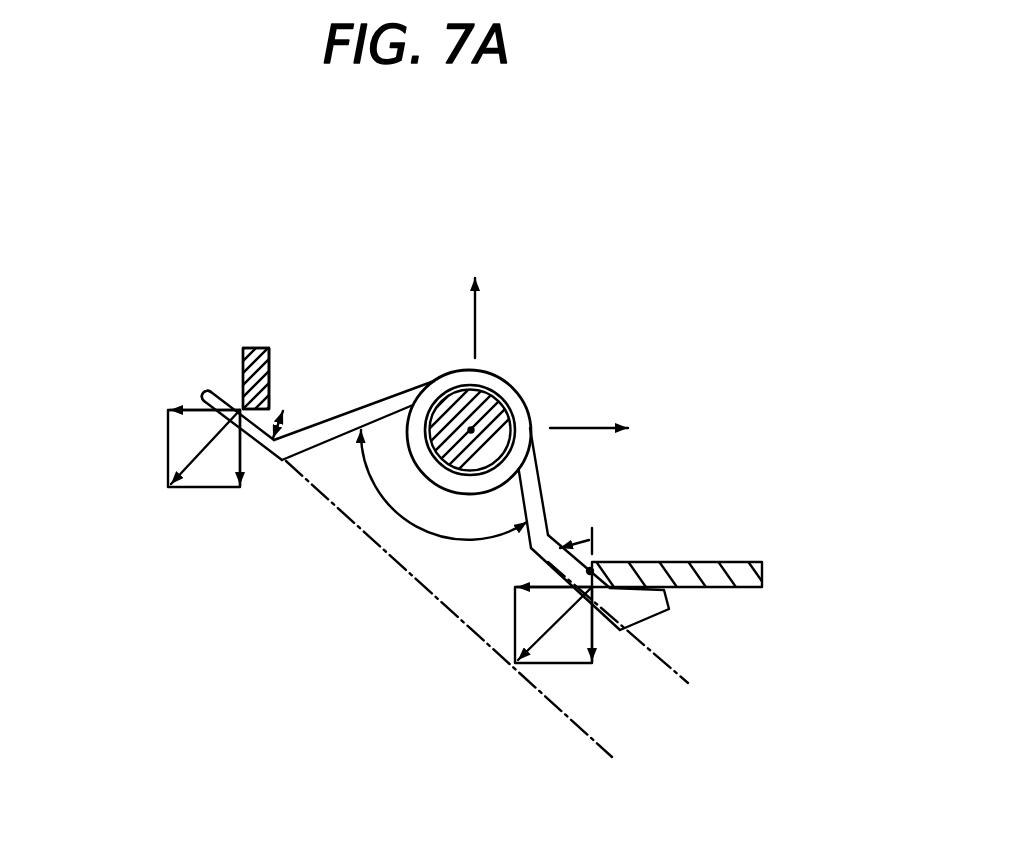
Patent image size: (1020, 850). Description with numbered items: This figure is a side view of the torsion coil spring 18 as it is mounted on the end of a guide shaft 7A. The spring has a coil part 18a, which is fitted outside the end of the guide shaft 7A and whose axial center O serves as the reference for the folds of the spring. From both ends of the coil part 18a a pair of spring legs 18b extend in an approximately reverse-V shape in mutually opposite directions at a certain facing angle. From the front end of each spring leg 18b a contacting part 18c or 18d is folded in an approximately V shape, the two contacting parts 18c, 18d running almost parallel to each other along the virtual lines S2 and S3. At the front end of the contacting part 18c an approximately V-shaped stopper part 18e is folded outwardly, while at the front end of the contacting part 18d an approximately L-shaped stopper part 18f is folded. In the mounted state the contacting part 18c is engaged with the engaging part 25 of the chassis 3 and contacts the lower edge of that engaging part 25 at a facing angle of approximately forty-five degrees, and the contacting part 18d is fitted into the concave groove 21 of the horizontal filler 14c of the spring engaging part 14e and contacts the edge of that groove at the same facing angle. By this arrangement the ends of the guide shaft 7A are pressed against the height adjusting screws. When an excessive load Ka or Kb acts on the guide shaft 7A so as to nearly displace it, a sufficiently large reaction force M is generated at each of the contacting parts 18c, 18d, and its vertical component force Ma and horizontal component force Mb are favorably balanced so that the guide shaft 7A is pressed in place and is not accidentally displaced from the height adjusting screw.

The chassis 3 is at (736, 556).
The guide shaft 7A is at (462, 404).
The horizontal filler 14c is at (262, 346).
The spring engaging part 14e is at (255, 323).
The torsion coil spring 18 is at (507, 363).
The coil part 18a is at (531, 410).
The spring legs 18b is at (374, 403).
The contacting part 18c is at (597, 626).
The contacting part 18d is at (258, 462).
The stopper part 18e is at (669, 613).
The stopper part 18f is at (214, 392).
The concave groove 21 is at (275, 390).
The engaging part 25 is at (593, 571).
The excessive load Ka is at (485, 301).
The excessive load Kb is at (615, 434).
The axial center O is at (476, 427).
The reaction force M is at (193, 477).
The vertical component force Ma is at (233, 475).
The horizontal component force Mb is at (182, 414).
The virtual line S2 is at (693, 665).
The virtual line S3 is at (612, 750).